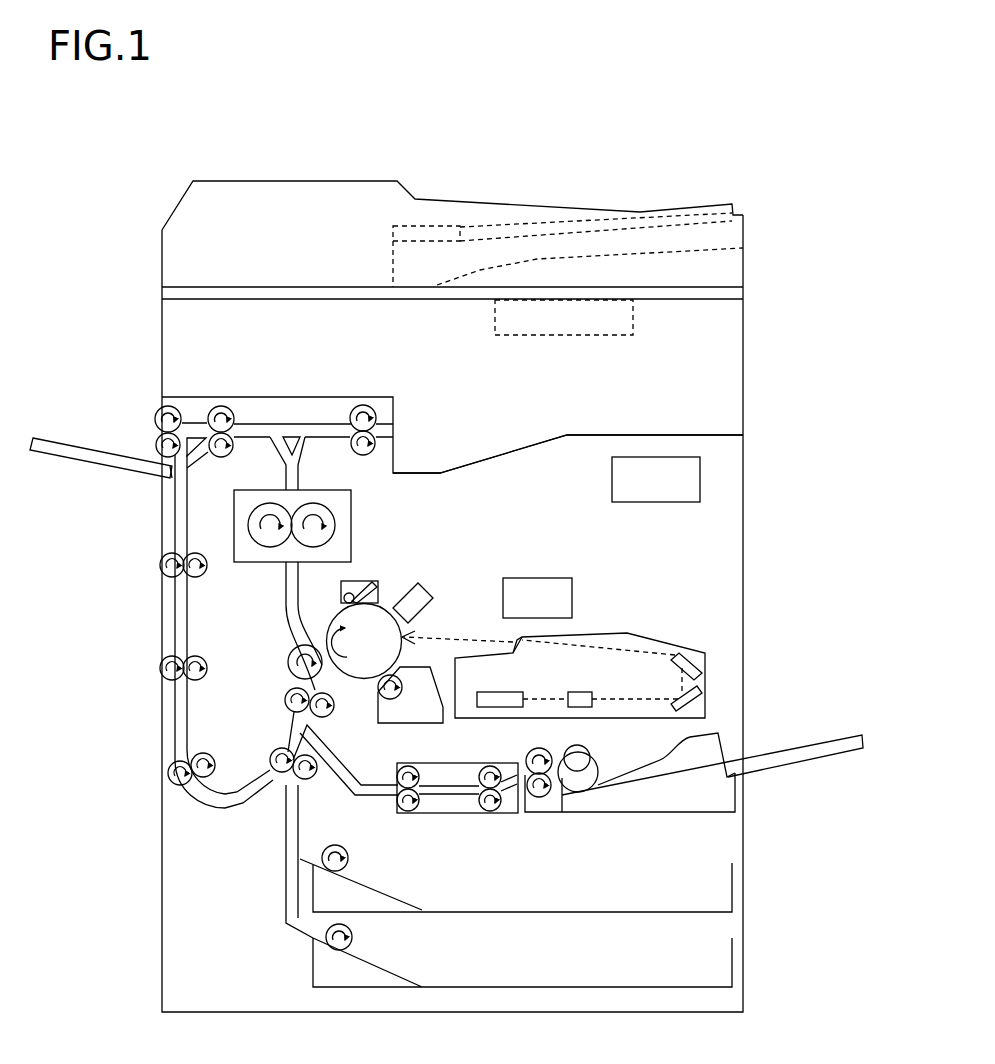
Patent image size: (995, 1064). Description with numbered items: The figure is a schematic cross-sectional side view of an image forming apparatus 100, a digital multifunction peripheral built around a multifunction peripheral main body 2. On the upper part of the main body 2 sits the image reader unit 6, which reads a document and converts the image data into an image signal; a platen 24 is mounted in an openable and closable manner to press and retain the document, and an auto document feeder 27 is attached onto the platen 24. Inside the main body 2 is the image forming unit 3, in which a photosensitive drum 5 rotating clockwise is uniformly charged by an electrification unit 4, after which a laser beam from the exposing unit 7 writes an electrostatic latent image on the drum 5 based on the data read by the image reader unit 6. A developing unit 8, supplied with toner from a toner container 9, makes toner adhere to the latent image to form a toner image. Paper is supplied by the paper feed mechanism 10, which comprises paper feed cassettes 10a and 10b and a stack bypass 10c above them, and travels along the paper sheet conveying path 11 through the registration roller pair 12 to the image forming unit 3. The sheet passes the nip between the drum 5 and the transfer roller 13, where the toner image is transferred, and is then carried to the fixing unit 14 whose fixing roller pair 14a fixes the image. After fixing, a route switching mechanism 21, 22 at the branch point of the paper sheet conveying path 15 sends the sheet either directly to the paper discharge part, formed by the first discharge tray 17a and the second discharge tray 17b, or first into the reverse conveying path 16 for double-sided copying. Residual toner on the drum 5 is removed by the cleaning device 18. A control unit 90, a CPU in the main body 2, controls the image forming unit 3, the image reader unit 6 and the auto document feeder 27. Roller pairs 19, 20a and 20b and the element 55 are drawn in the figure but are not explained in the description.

The image forming apparatus 100 is at (658, 172).
The multifunction peripheral main body 2 is at (750, 535).
The image forming unit 3 is at (413, 563).
The electrification unit 4 is at (432, 603).
The photosensitive drum 5 is at (350, 665).
The image reader unit 6 is at (172, 355).
The exposing unit 7 is at (607, 645).
The developing unit 8 is at (405, 710).
The toner container 9 is at (540, 588).
The paper feed mechanism 10 is at (766, 840).
The paper feed cassette 10a is at (717, 893).
The paper feed cassette 10b is at (722, 970).
The stack bypass 10c is at (777, 730).
The paper sheet conveying path 11 is at (280, 808).
The registration roller pair 12 is at (293, 714).
The transfer roller 13 is at (288, 668).
The fixing unit 14 is at (230, 523).
The fixing roller pair 14a is at (327, 525).
The paper sheet conveying path 15 is at (270, 480).
The reverse conveying path 16 is at (175, 605).
The first discharge tray 17a is at (568, 447).
The second discharge tray 17b is at (80, 448).
The cleaning device 18 is at (365, 580).
The conveying rollers 19 is at (226, 406).
The first discharge rollers 20a is at (366, 405).
The second discharge rollers 20b is at (155, 430).
The route switching mechanism 21 is at (292, 436).
The route switching mechanism 22 is at (172, 446).
The platen 24 is at (745, 291).
The auto document feeder 27 is at (200, 214).
The reading sensor 55 is at (560, 336).
The control unit 90 is at (700, 478).